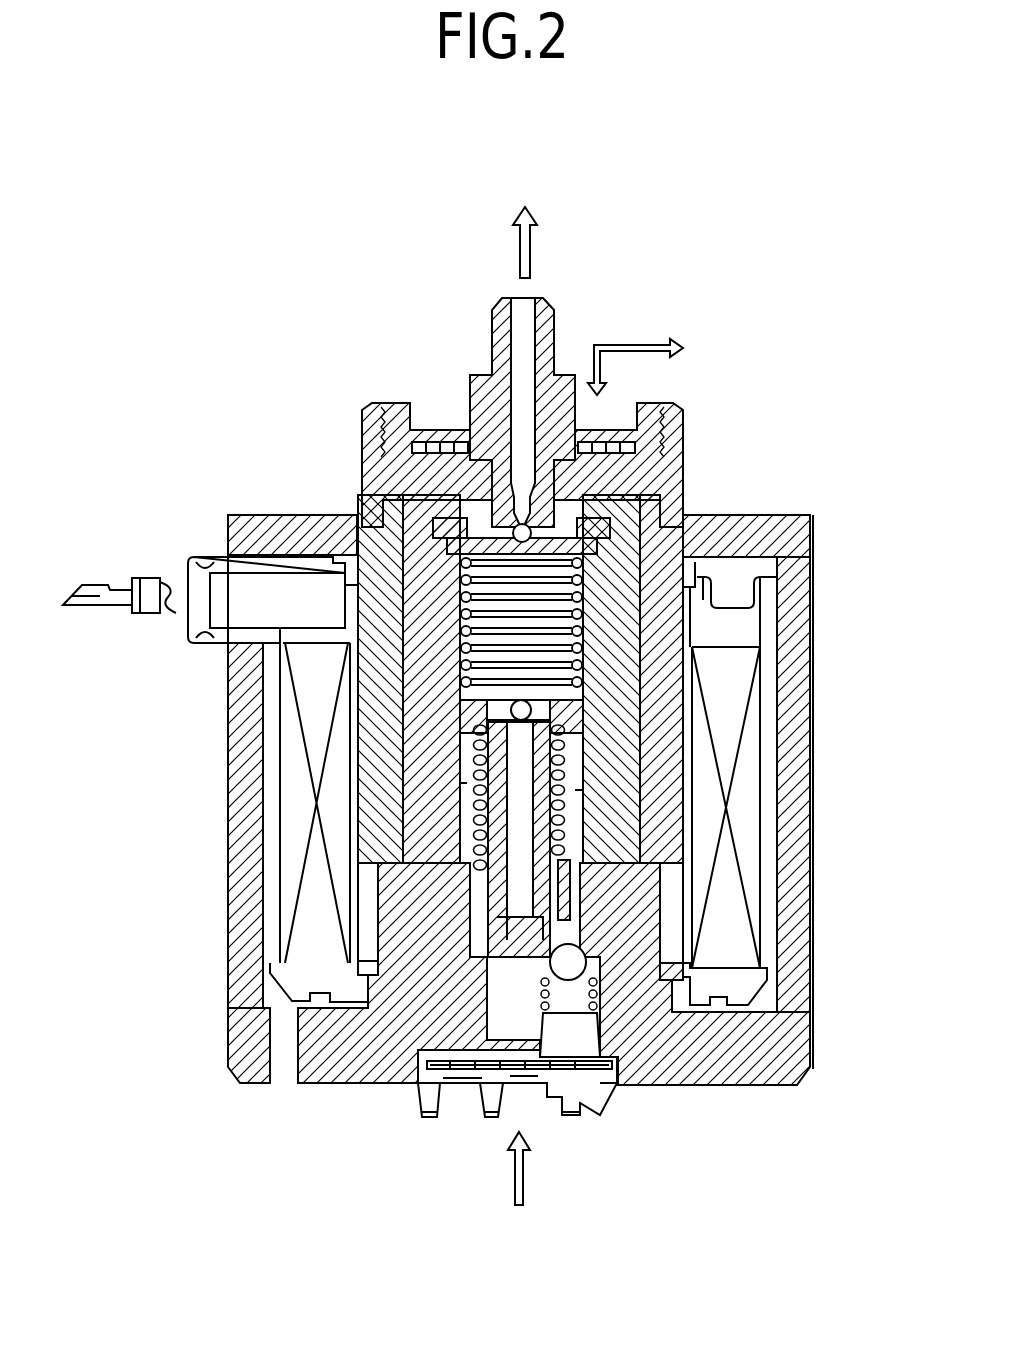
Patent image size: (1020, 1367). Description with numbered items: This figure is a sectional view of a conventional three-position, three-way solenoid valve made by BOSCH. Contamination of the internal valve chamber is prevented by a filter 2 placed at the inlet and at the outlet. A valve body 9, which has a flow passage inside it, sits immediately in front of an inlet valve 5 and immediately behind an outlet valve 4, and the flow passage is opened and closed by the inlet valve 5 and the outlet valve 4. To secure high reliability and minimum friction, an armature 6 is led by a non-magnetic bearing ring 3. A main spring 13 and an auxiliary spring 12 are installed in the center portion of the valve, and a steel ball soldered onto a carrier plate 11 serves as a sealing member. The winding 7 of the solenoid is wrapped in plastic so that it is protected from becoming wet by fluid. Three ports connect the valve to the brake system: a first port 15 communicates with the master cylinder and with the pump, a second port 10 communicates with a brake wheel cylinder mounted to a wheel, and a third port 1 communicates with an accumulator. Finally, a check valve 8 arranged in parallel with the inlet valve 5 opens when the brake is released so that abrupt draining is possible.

The third port 1 is at (520, 322).
The filter 2 is at (433, 447).
The non-magnetic bearing ring 3 is at (380, 503).
The outlet valve 4 is at (463, 577).
The inlet valve 5 is at (555, 733).
The armature 6 is at (430, 760).
The winding 7 is at (290, 912).
The check valve 8 is at (570, 967).
The valve body 9 is at (550, 327).
The second port 10 is at (610, 418).
The carrier plate 11 is at (607, 527).
The auxiliary spring 12 is at (585, 607).
The main spring 13 is at (570, 800).
The first port 15 is at (537, 1087).